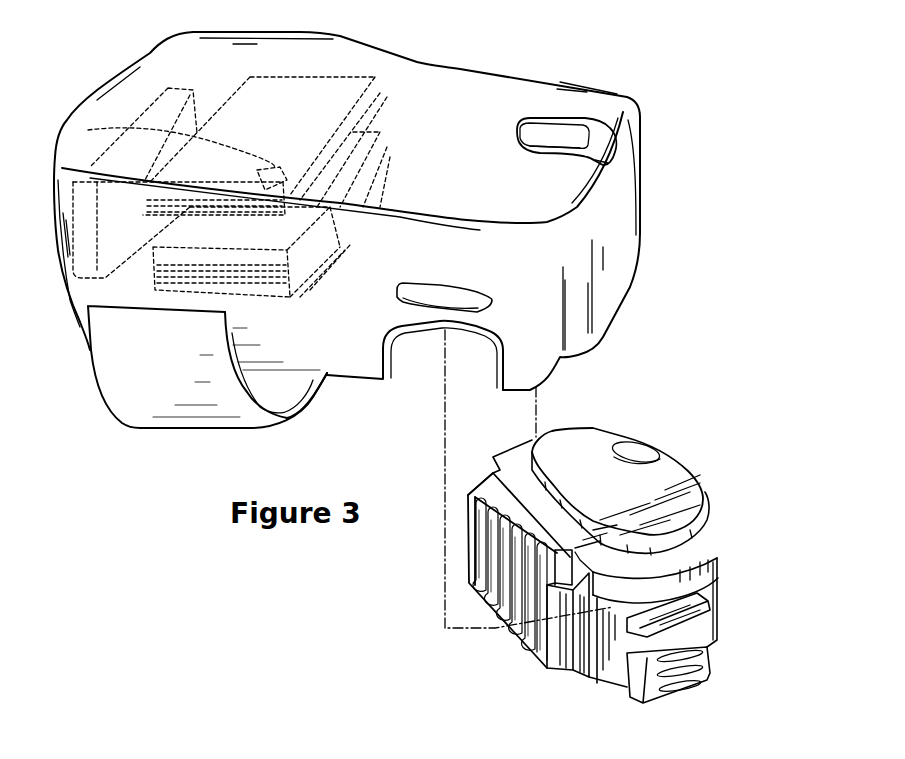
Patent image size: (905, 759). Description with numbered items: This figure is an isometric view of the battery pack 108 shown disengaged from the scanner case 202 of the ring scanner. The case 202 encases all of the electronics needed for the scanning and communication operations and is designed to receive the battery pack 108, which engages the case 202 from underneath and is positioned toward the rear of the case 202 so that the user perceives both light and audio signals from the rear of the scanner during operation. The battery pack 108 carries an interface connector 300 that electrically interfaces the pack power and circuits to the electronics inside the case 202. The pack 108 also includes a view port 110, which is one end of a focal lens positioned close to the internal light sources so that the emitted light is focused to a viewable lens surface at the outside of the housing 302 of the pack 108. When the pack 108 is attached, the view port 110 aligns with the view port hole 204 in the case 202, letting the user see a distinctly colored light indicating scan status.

The case 202 is at (500, 73).
The view port hole 204 is at (560, 150).
The battery pack 108 is at (703, 482).
The housing 302 is at (583, 430).
The view port 110 is at (633, 452).
The interface connector 300 is at (503, 562).